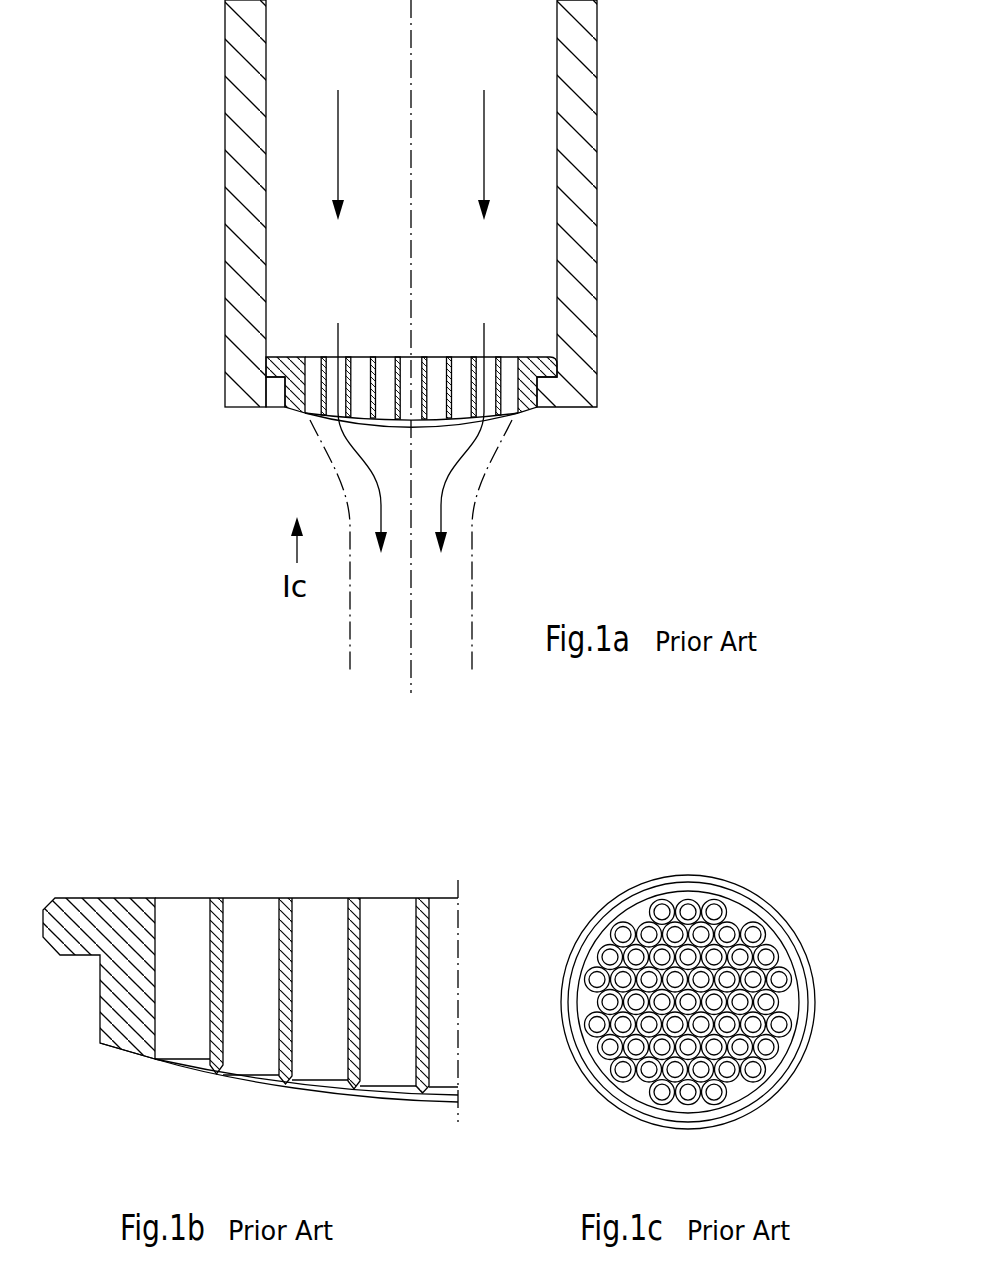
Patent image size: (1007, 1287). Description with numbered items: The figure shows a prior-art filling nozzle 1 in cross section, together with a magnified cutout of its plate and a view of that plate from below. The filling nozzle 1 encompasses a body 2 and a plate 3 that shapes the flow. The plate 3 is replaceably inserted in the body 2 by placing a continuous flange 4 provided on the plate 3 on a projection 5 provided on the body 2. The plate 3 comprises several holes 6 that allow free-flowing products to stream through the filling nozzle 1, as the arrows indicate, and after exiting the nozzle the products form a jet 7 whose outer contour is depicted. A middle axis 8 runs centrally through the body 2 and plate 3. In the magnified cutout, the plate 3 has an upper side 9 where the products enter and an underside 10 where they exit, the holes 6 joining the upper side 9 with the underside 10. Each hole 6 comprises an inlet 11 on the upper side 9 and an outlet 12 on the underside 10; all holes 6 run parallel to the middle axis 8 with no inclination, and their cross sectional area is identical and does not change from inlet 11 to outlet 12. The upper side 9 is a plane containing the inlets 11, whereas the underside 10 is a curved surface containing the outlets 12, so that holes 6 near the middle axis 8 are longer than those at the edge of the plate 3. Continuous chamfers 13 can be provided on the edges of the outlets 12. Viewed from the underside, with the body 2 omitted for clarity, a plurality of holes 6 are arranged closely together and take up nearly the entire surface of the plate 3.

In FIG. 1A, the filling nozzle 1 is at (640, 80).
In FIG. 1A, the body 2 is at (583, 193).
In FIG. 1A, the plate 3 is at (411, 357).
In FIG. 1B, the plate 3 is at (251, 970).
In FIG. 1C, the plate 3 is at (718, 959).
In FIG. 1A, the continuous flange 4 is at (275, 365).
In FIG. 1B, the continuous flange 4 is at (72, 913).
In FIG. 1C, the continuous flange 4 is at (668, 888).
In FIG. 1A, the projection 5 is at (278, 380).
In FIG. 1A, the holes 6 is at (508, 367).
In FIG. 1B, the holes 6 is at (248, 913).
In FIG. 1C, the holes 6 is at (735, 960).
In FIG. 1A, the jet 7 is at (473, 550).
In FIG. 1A, the middle axis 8 is at (412, 47).
In FIG. 1B, the middle axis 8 is at (458, 950).
In FIG. 1B, the upper side 9 is at (353, 900).
In FIG. 1B, the underside 10 is at (435, 1103).
In FIG. 1C, the underside 10 is at (735, 1001).
In FIG. 1B, the inlet 11 is at (312, 898).
In FIG. 1B, the outlet 12 is at (320, 1078).
In FIG. 1B, the continuous chamfers 13 is at (215, 1072).
In FIG. 1C, the continuous chamfers 13 is at (780, 950).